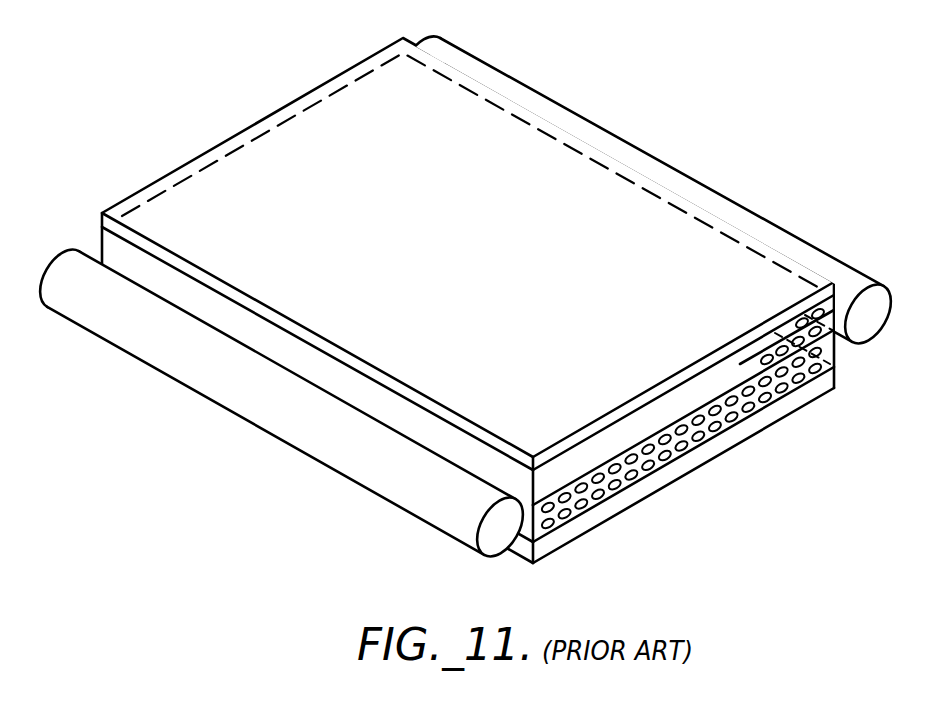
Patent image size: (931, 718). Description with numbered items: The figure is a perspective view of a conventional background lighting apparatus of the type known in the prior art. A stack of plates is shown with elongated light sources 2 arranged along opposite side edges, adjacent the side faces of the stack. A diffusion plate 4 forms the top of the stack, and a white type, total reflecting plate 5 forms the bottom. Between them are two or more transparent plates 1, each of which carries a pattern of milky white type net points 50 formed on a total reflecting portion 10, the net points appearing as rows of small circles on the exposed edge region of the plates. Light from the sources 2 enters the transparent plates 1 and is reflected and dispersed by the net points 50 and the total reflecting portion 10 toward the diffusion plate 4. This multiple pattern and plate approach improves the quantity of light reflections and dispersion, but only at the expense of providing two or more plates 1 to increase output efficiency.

The transparent plate 1 is at (837, 313).
The light source 2 is at (628, 152).
The diffusion plate 4 is at (680, 227).
The total reflecting plate 5 is at (823, 395).
The total reflecting portion 10 is at (722, 425).
The net points 50 is at (788, 392).